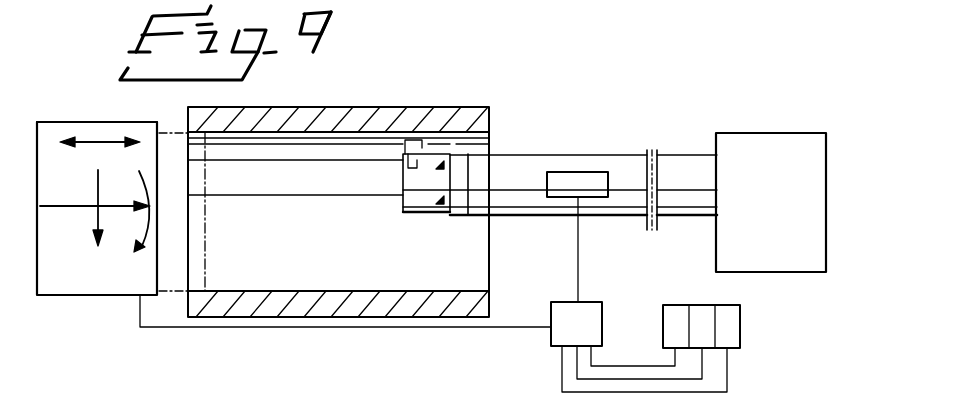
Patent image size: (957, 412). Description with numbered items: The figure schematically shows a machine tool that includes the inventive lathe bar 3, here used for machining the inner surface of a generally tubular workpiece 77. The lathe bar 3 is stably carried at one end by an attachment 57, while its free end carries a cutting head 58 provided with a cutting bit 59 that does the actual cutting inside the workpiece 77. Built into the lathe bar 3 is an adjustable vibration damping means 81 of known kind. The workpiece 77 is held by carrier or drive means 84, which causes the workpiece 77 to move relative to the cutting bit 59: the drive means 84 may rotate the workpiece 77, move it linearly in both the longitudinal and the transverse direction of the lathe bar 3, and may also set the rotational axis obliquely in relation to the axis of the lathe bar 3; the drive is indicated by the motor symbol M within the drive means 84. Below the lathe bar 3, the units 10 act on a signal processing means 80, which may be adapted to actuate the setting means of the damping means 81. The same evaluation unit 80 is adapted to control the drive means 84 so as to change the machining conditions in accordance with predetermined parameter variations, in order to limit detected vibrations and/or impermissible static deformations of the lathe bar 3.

The motor M is at (67, 282).
The drive means 84 is at (87, 125).
The tubular workpiece 77 is at (312, 118).
The cutting bit 59 is at (411, 146).
The cutting head 58 is at (433, 167).
The lathe bar 3 is at (533, 163).
The vibration damping means 81 is at (583, 178).
The attachment 57 is at (786, 211).
The signal processing means 80 is at (590, 336).
The units 10 is at (741, 322).